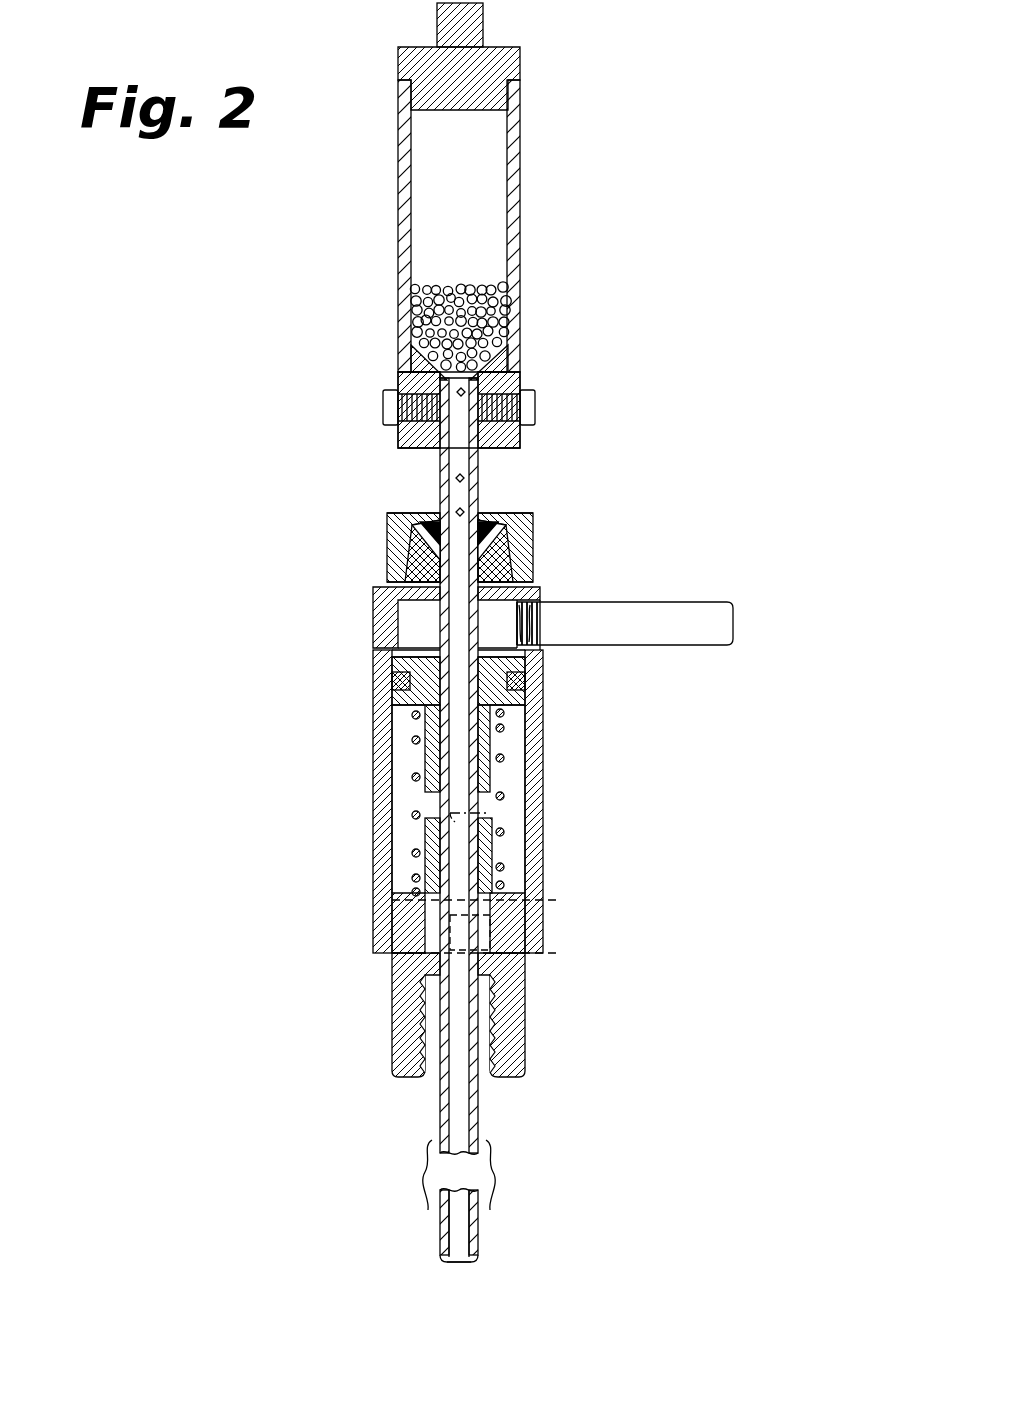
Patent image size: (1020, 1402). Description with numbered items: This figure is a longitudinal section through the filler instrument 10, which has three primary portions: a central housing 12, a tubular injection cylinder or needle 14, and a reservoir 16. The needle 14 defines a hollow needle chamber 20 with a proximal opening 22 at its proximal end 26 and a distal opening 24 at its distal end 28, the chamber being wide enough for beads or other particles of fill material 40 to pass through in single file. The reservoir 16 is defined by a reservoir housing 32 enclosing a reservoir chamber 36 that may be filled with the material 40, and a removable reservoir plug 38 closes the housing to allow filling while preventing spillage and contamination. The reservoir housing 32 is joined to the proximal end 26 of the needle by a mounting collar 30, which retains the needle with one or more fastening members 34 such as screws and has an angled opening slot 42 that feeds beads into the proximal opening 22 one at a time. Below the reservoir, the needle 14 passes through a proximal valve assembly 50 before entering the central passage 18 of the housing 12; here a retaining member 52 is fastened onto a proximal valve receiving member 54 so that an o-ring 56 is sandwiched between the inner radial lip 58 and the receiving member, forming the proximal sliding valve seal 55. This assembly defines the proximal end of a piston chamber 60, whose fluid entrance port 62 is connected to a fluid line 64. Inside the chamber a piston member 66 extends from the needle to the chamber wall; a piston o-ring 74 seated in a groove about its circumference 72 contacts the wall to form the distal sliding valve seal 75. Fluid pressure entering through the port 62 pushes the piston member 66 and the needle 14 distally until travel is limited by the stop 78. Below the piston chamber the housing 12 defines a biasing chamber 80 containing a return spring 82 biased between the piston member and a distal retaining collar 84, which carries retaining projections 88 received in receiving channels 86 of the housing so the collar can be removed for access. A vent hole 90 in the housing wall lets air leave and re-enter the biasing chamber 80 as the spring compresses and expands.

The filler instrument 10 is at (245, 222).
The central housing 12 is at (370, 787).
The needle 14 is at (530, 682).
The reservoir 16 is at (524, 166).
The central passage 18 is at (545, 602).
The needle chamber 20 is at (478, 496).
The proximal opening 22 is at (492, 374).
The distal opening 24 is at (460, 1263).
The proximal end 26 is at (484, 386).
The distal end 28 is at (477, 1222).
The mounting collar 30 is at (400, 424).
The reservoir housing 32 is at (398, 331).
The fastening members 34 is at (383, 403).
The reservoir chamber 36 is at (518, 137).
The reservoir plug 38 is at (410, 62).
The fill material 40 is at (466, 290).
The opening slot 42 is at (412, 362).
The proximal valve assembly 50 is at (510, 532).
The retaining member 52 is at (525, 530).
The proximal valve receiving member 54 is at (408, 572).
The proximal sliding valve seal 55 is at (420, 550).
The o-ring 56 is at (428, 522).
The inner radial lip 58 is at (492, 517).
The piston chamber 60 is at (437, 620).
The fluid entrance port 62 is at (540, 628).
The fluid line 64 is at (683, 637).
The piston member 66 is at (515, 712).
The circumference 72 is at (424, 683).
The piston o-ring 74 is at (424, 710).
The distal sliding valve seal 75 is at (520, 695).
The stop 78 is at (423, 830).
The biasing chamber 80 is at (403, 808).
The return spring 82 is at (507, 867).
The distal retaining collar 84 is at (518, 1030).
The receiving channels 86 is at (522, 903).
The retaining projections 88 is at (556, 953).
The vent hole 90 is at (527, 818).